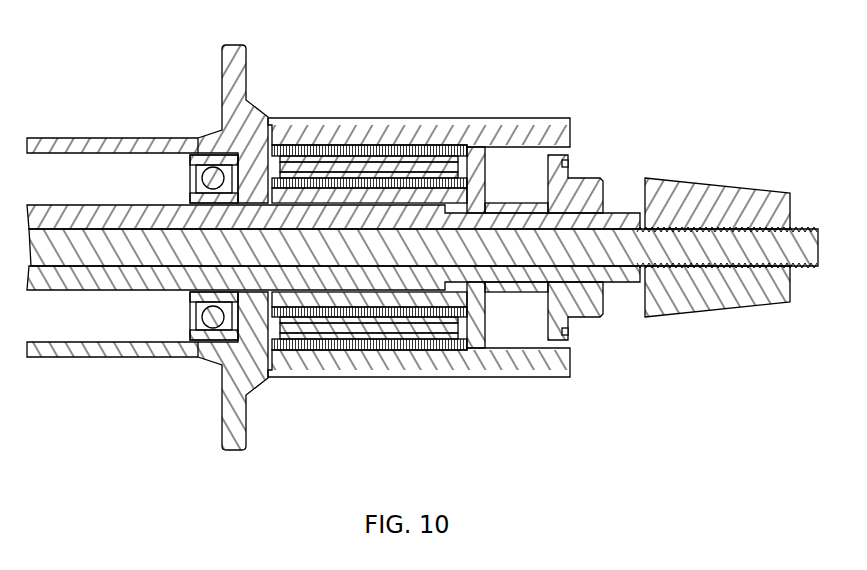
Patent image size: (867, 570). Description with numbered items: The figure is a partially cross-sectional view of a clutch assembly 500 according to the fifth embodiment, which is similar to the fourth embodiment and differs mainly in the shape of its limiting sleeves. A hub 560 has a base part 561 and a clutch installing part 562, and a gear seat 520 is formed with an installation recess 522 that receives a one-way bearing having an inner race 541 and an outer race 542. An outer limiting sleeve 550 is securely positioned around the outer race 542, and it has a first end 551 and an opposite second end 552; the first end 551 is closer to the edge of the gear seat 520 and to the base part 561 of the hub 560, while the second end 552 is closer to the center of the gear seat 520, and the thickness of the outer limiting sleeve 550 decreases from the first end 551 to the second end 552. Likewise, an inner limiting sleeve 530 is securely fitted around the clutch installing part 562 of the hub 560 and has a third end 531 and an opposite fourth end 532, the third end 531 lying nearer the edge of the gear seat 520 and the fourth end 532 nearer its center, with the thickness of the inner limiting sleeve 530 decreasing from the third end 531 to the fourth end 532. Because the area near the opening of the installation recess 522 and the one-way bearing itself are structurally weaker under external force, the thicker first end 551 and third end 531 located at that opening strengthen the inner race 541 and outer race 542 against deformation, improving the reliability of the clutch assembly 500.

The clutch assembly 500 is at (44, 23).
The gear seat 520 is at (443, 102).
The installation recess 522 is at (474, 187).
The inner limiting sleeve 530 is at (302, 148).
The third end 531 is at (260, 182).
The fourth end 532 is at (486, 175).
The inner race 541 is at (408, 166).
The outer race 542 is at (372, 174).
The outer limiting sleeve 550 is at (330, 158).
The first end 551 is at (296, 192).
The second end 552 is at (465, 163).
The hub 560 is at (185, 95).
The base part 561 is at (100, 146).
The clutch installing part 562 is at (204, 168).